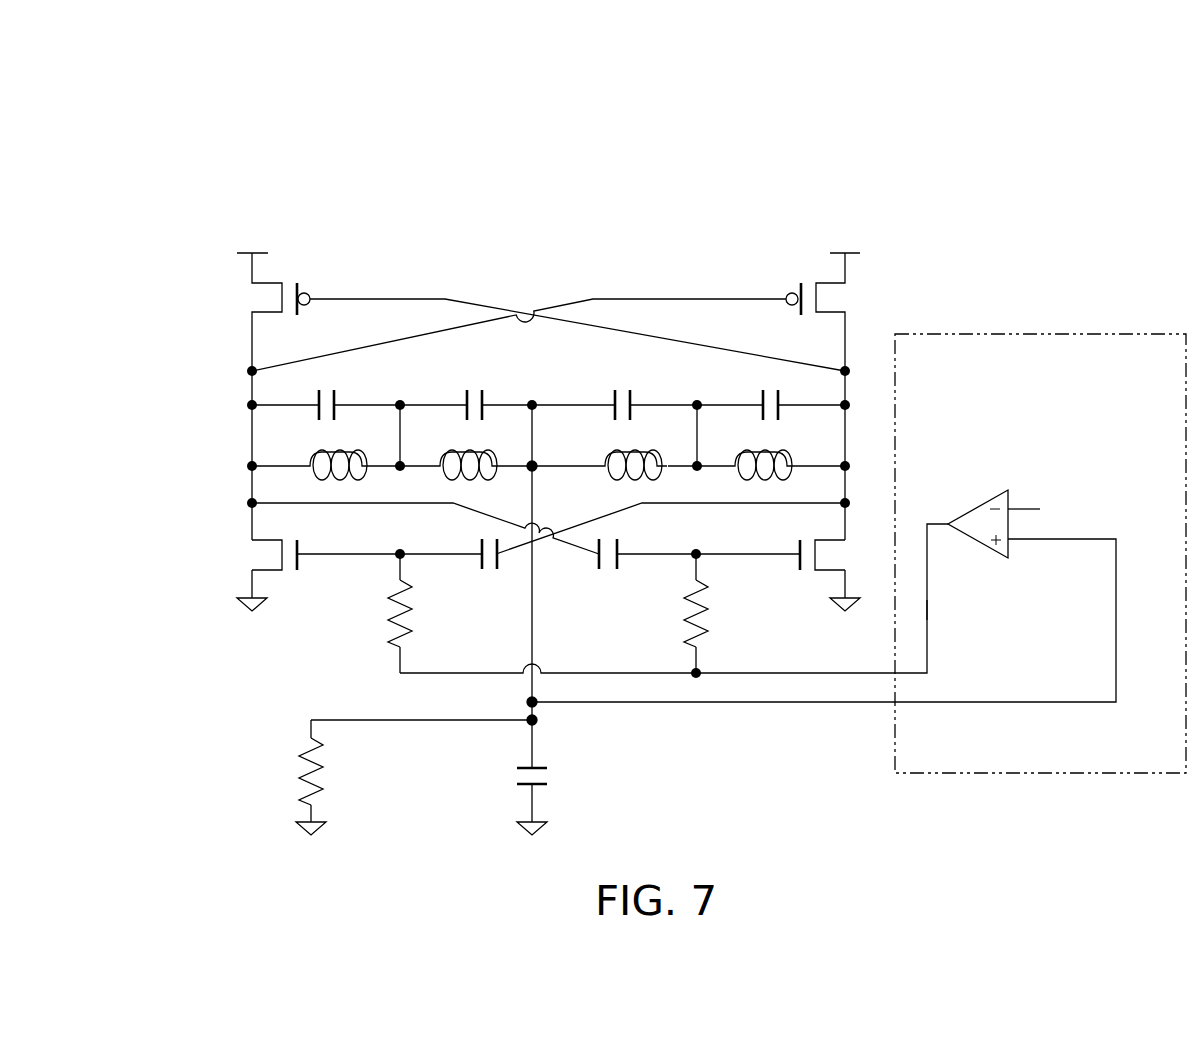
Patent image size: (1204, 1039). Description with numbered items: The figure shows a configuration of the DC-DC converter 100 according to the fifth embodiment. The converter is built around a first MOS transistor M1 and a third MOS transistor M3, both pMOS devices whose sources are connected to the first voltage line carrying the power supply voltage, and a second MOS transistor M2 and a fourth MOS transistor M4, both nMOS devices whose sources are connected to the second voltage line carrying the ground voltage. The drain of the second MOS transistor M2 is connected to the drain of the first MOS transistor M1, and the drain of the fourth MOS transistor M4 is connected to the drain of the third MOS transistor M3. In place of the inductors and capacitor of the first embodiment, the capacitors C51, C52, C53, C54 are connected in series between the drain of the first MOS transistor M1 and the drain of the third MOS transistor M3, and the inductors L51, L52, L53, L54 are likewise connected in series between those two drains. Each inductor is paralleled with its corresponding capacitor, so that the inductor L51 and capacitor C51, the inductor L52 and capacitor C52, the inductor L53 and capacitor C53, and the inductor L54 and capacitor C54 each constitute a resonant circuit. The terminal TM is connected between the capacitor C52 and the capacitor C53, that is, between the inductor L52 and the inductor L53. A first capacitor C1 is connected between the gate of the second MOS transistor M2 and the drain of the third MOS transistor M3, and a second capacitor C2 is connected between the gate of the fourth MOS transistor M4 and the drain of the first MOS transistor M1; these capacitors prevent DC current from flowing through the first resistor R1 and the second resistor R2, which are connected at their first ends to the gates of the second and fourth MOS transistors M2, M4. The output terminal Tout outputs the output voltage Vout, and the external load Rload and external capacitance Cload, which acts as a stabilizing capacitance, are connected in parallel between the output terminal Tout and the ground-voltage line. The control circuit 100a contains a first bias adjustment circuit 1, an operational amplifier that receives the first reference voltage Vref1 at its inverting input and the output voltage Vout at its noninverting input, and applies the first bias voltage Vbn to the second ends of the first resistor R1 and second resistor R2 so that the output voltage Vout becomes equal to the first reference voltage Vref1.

The DC-DC converter 100 is at (207, 190).
The control circuit 100a is at (1042, 334).
The first bias adjustment circuit 1 is at (980, 507).
The first MOS transistor M1 is at (272, 283).
The second MOS transistor M2 is at (270, 541).
The third MOS transistor M3 is at (826, 283).
The fourth MOS transistor M4 is at (824, 541).
The capacitor C51 is at (334, 402).
The capacitor C52 is at (484, 390).
The capacitor C53 is at (614, 393).
The capacitor C54 is at (762, 392).
The inductor L51 is at (302, 462).
The inductor L52 is at (430, 462).
The inductor L53 is at (597, 462).
The inductor L54 is at (798, 462).
The terminal TM is at (538, 470).
The first capacitor C1 is at (484, 571).
The second capacitor C2 is at (618, 540).
The first resistor R1 is at (396, 586).
The second resistor R2 is at (688, 597).
The output terminal Tout is at (530, 702).
The output voltage Vout is at (537, 722).
The external capacitance Cload is at (540, 767).
The external load Rload is at (302, 757).
The first reference voltage Vref1 is at (1054, 511).
The first bias voltage Vbn is at (949, 607).